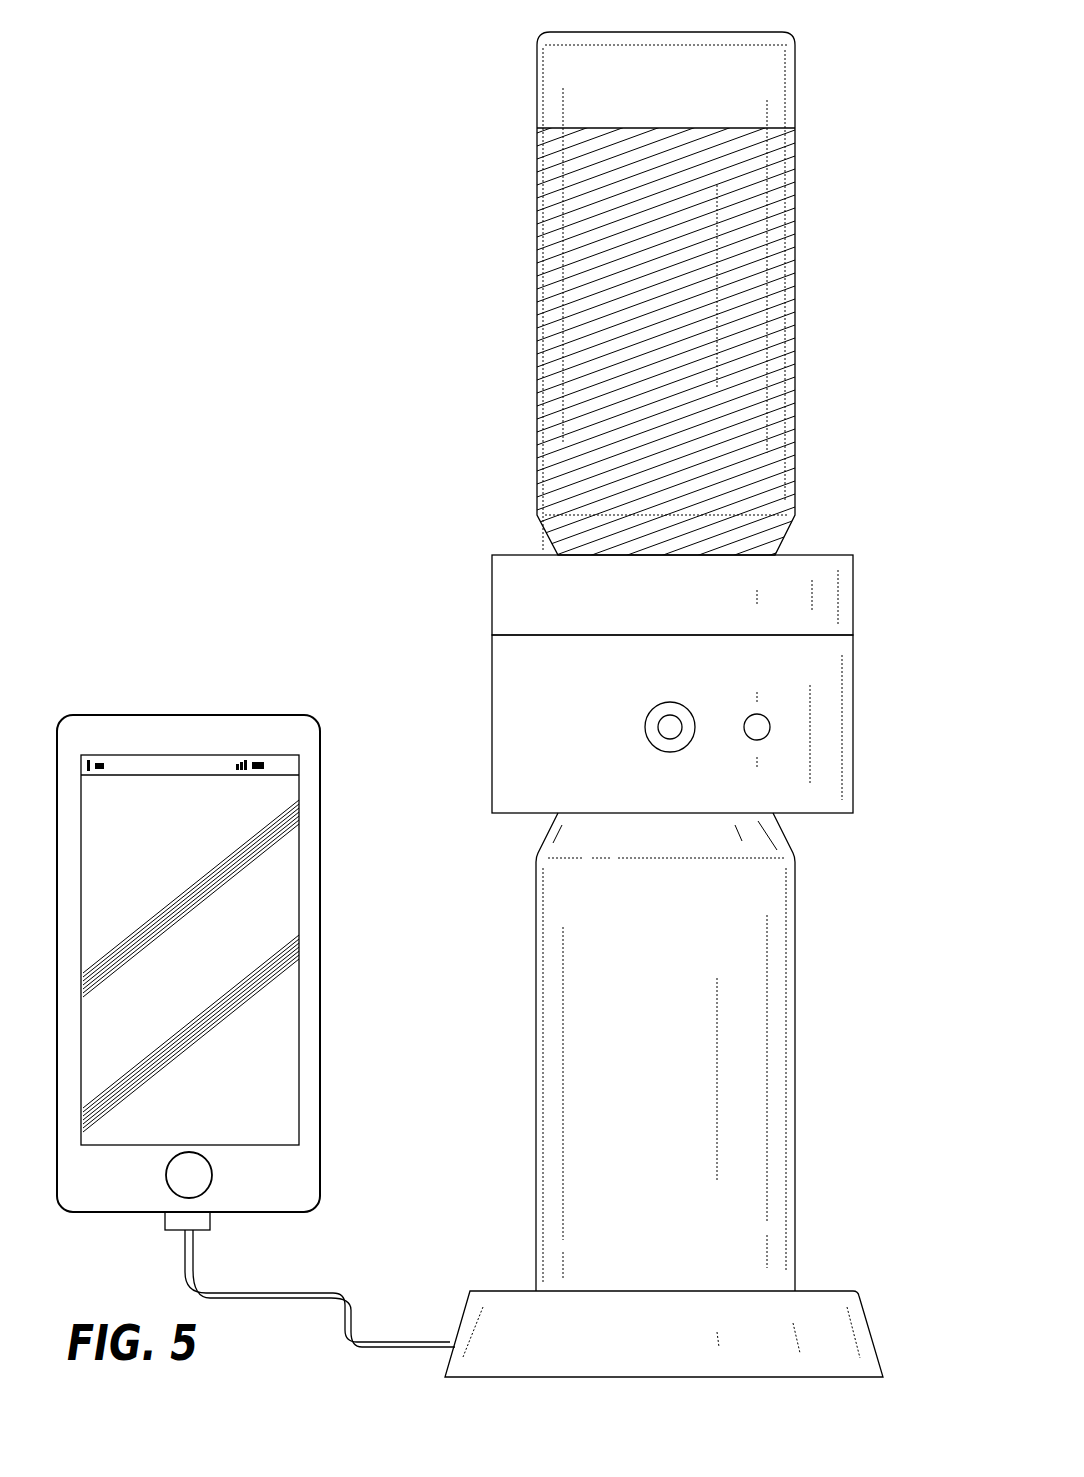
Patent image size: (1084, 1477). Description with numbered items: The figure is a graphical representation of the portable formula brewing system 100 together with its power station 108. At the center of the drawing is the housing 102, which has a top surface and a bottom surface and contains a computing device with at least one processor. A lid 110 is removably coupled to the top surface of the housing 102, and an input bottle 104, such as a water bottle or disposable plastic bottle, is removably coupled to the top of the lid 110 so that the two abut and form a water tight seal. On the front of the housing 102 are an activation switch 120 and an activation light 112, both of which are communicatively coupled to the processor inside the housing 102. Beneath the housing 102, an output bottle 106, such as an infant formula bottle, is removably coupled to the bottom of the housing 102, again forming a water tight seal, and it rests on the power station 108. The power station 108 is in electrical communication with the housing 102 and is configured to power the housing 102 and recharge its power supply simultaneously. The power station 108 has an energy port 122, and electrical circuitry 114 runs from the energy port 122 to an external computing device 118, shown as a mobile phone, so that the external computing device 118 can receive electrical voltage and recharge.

The portable formula brewing system 100 is at (291, 56).
The housing 102 is at (510, 750).
The input bottle 104 is at (555, 97).
The output bottle 106 is at (555, 1105).
The power station 108 is at (823, 1307).
The lid 110 is at (508, 585).
The activation light 112 is at (770, 728).
The electrical circuitry 114 is at (192, 1268).
The external computing device 118 is at (308, 955).
The activation switch 120 is at (653, 727).
The energy port 122 is at (448, 1343).